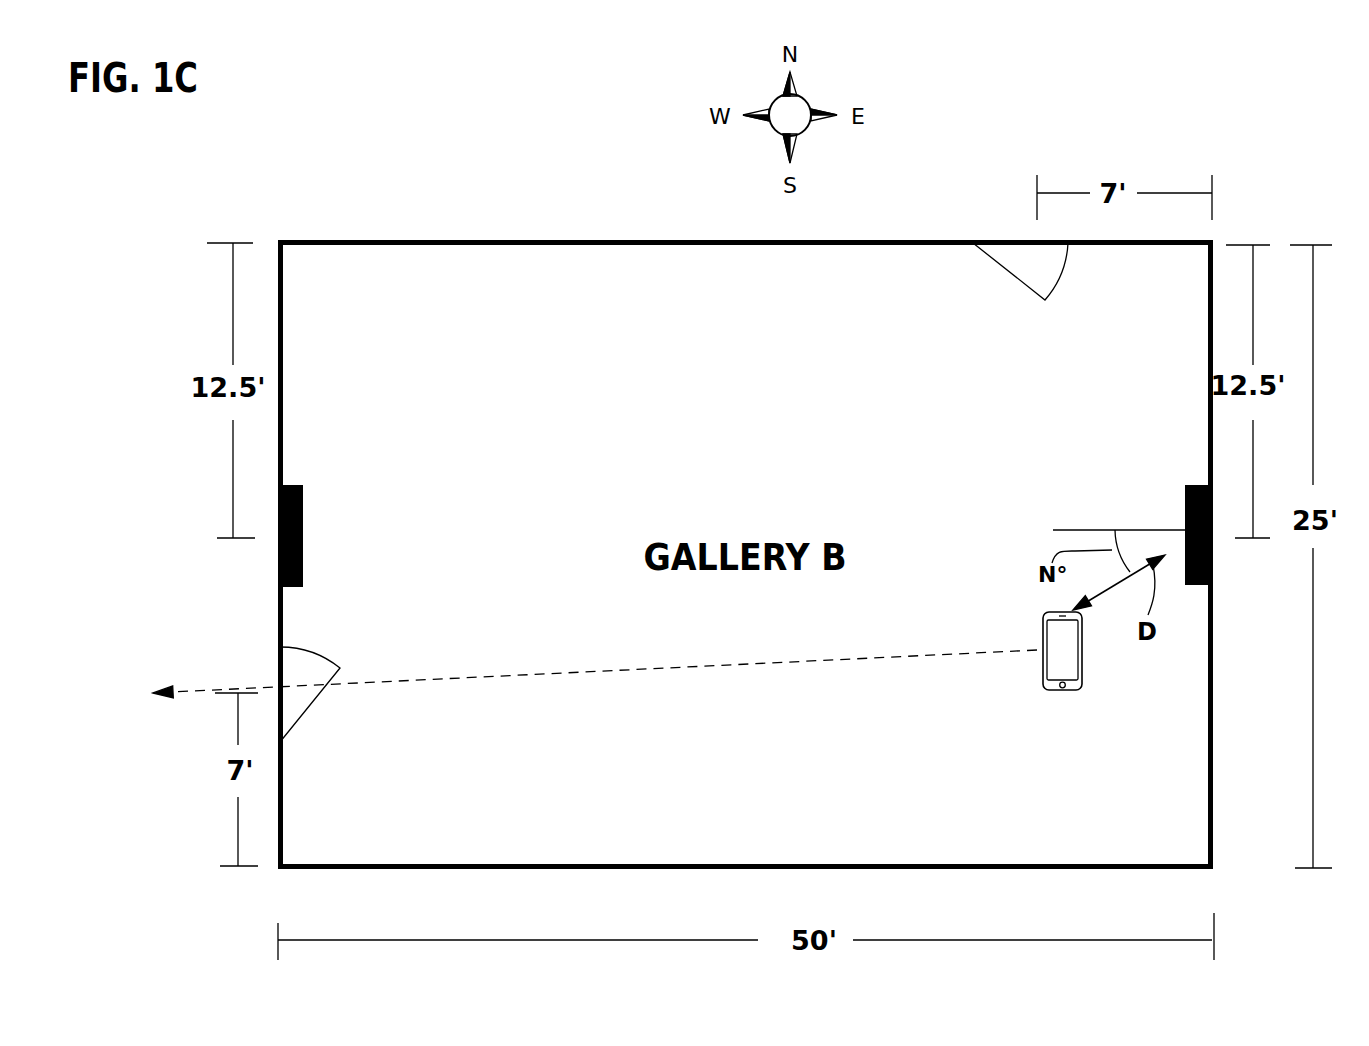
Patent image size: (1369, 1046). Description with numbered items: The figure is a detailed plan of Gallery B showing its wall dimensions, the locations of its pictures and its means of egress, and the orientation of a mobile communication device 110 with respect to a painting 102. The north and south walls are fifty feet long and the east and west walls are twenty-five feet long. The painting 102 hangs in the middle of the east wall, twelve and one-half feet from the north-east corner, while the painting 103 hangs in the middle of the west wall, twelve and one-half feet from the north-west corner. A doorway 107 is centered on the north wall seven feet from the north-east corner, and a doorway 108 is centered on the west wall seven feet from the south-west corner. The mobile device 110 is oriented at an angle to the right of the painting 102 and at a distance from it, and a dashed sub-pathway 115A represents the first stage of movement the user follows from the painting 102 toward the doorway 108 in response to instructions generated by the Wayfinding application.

The painting 102 is at (1185, 483).
The painting 103 is at (303, 556).
The doorway 107 is at (1010, 281).
The doorway 108 is at (315, 703).
The mobile communication device 110 is at (1035, 650).
The sub-pathway 115A is at (773, 664).